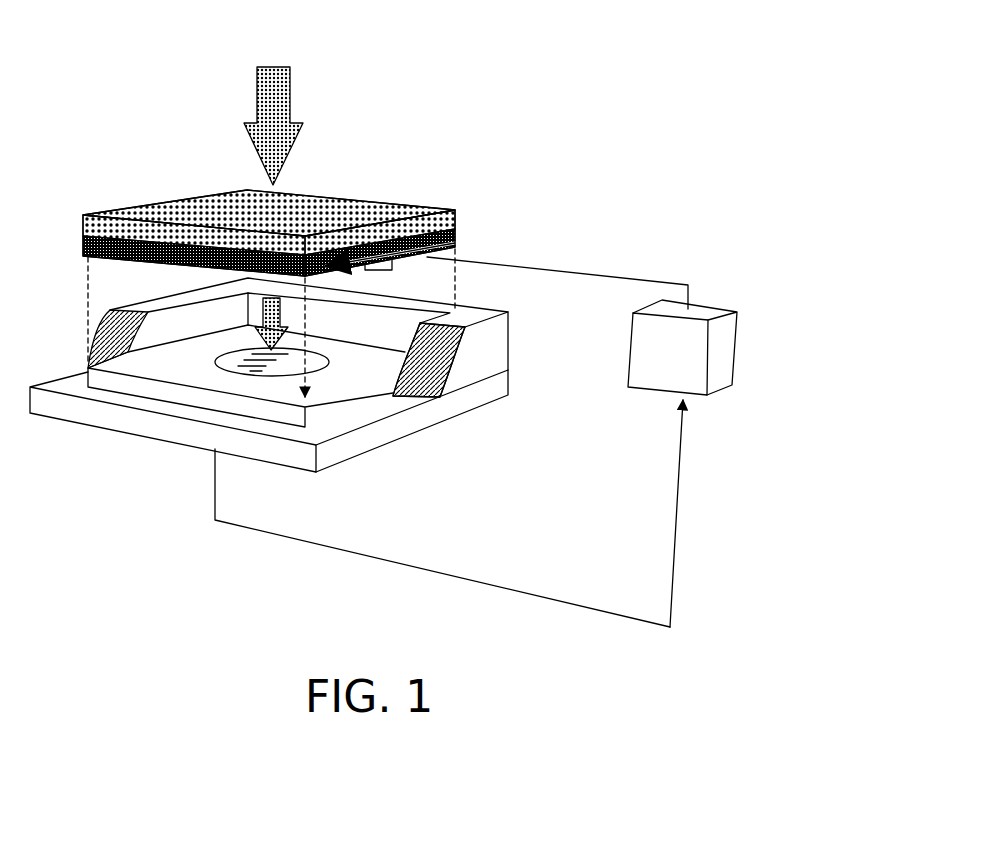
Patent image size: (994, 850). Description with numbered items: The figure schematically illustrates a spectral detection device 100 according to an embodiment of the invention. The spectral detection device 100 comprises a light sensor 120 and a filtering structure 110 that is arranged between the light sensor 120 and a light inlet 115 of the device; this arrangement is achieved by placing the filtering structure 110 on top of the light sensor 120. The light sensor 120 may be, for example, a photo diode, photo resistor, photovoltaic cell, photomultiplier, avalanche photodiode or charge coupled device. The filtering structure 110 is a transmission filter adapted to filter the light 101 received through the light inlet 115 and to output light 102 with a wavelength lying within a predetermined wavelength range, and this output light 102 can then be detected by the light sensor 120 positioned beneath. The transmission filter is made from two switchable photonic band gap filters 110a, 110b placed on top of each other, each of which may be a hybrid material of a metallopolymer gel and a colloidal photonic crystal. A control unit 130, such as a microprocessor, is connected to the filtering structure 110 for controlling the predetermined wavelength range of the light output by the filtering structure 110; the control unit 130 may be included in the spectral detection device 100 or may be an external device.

The spectral detection device 100 is at (522, 98).
The light 101 is at (292, 87).
The output light 102 is at (228, 360).
The filtering structure 110 is at (486, 222).
The switchable photonic band gap filter 110a is at (326, 244).
The switchable photonic band gap filter 110b is at (456, 242).
The light inlet 115 is at (349, 182).
The light sensor 120 is at (356, 402).
The control unit 130 is at (722, 350).